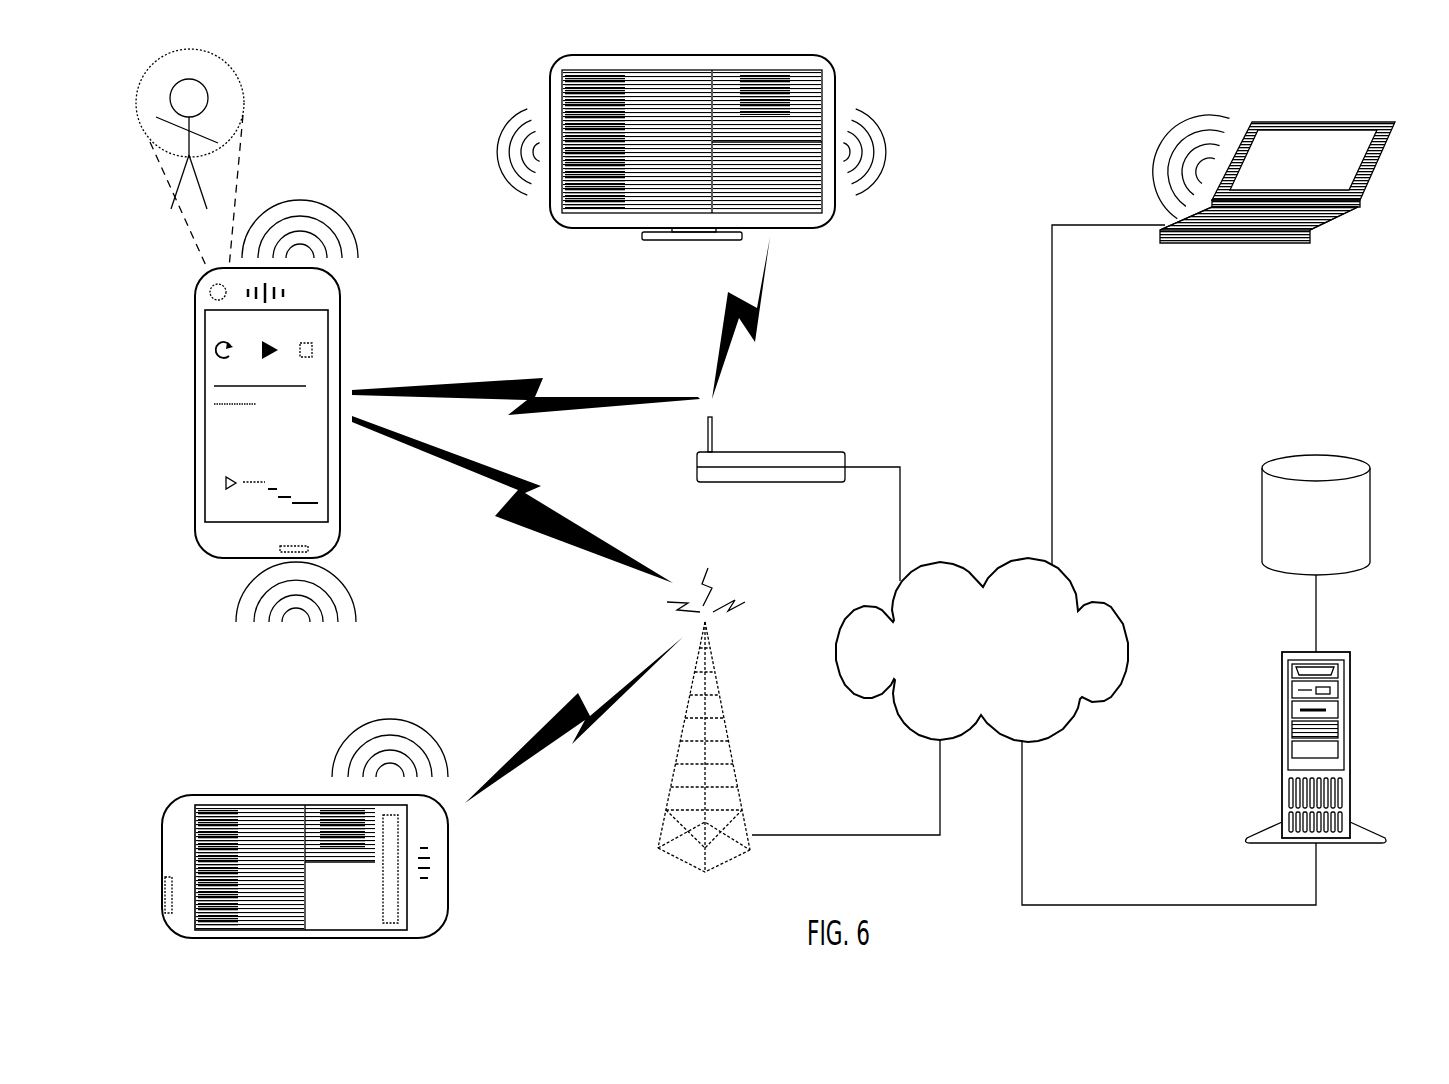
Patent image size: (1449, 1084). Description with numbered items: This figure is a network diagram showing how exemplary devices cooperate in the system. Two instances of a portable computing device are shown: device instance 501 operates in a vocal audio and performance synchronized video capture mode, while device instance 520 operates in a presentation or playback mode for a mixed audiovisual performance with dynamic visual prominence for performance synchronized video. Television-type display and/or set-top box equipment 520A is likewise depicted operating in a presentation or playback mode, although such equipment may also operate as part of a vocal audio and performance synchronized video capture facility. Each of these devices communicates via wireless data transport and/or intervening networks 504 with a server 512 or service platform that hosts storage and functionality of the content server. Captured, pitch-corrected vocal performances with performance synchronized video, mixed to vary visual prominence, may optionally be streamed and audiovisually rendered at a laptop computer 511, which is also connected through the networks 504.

The portable computing device instance 501 is at (340, 497).
The portable computing device instance 520 is at (215, 795).
The television-type display and/or set-top box equipment 520A is at (550, 96).
The networks 504 is at (1062, 665).
The laptop computer 511 is at (1208, 243).
The server 512 is at (1352, 720).